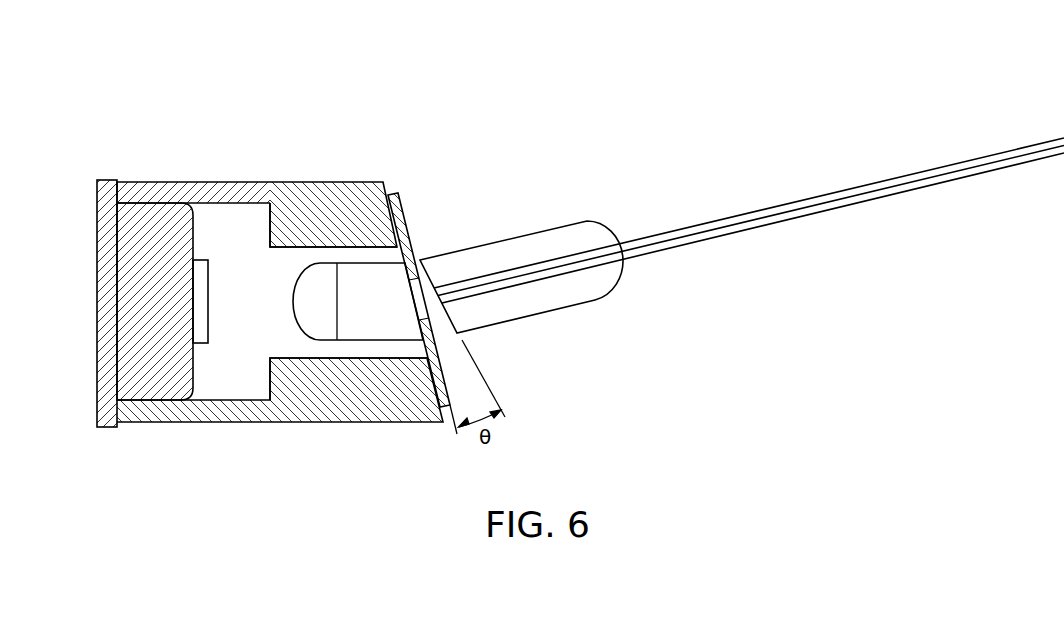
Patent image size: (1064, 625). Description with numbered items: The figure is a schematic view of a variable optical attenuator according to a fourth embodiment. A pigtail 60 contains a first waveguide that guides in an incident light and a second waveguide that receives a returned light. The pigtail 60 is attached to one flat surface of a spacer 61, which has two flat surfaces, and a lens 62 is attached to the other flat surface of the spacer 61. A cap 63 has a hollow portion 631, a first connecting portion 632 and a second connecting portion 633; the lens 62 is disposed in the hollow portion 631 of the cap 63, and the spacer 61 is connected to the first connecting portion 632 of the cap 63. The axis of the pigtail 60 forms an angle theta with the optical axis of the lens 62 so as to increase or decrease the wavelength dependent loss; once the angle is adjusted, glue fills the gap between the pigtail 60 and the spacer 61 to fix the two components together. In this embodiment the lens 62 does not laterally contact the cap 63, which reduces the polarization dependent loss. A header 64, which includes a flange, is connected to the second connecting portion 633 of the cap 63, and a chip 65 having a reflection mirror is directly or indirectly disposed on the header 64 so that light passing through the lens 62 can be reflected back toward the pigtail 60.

The pigtail 60 is at (535, 247).
The spacer 61 is at (400, 212).
The lens 62 is at (320, 327).
The cap 63 is at (280, 226).
The hollow portion 631 is at (227, 235).
The first connecting portion 632 is at (320, 213).
The second connecting portion 633 is at (155, 195).
The header 64 is at (140, 348).
The chip 65 is at (200, 296).